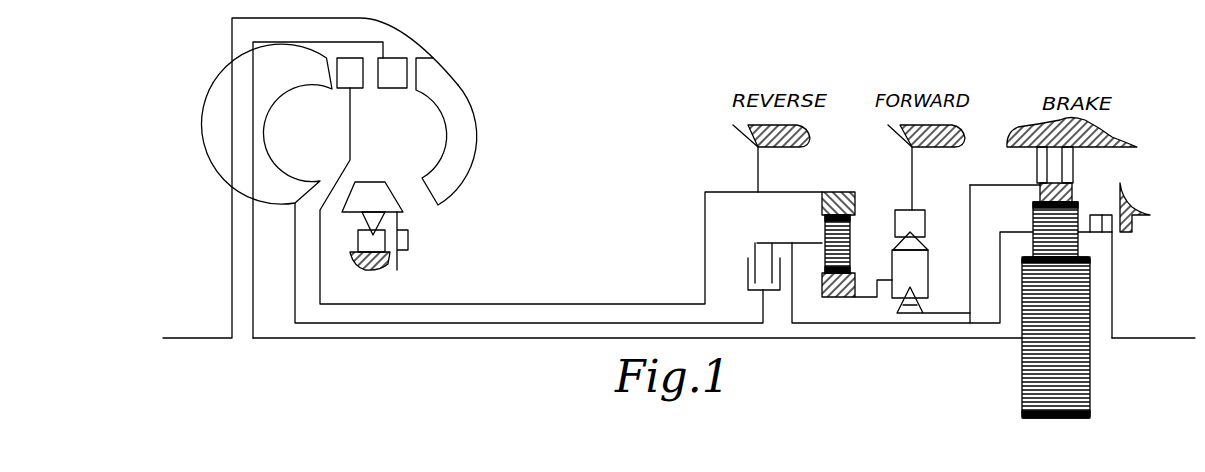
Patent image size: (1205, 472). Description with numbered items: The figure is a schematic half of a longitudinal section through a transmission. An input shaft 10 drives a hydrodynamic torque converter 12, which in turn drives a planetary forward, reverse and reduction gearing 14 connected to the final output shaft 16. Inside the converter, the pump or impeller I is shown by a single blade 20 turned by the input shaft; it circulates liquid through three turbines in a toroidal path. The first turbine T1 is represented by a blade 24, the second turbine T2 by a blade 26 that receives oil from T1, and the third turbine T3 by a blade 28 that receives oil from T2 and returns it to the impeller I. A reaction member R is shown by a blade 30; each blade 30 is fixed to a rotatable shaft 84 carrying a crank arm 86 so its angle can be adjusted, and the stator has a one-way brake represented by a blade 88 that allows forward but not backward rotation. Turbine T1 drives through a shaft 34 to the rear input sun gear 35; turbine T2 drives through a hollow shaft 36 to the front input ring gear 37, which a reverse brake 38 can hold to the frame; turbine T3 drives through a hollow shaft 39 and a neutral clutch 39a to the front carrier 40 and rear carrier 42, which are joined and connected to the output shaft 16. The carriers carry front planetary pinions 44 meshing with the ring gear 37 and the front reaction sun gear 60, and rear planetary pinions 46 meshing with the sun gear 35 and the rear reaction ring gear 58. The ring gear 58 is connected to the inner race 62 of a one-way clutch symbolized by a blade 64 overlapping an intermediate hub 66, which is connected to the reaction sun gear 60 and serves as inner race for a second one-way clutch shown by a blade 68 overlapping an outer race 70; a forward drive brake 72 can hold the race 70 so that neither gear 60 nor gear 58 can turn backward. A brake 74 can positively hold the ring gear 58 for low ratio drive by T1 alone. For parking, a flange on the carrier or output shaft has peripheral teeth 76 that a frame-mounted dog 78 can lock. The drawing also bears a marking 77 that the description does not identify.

The input shaft 10 is at (205, 338).
The torque converter 12 is at (440, 60).
The planetary forward, reverse and reduction gearing 14 is at (967, 137).
The output shaft 16 is at (1143, 337).
The blade 20 is at (450, 88).
The blade 24 is at (398, 62).
The blade 26 is at (335, 60).
The blade 28 is at (283, 152).
The blade 30 is at (387, 182).
The shaft 34 is at (548, 338).
The rear input sun gear 35 is at (1090, 368).
The hollow shaft 36 is at (493, 304).
The front input ring gear 37 is at (855, 200).
The reverse brake 38 is at (753, 138).
The hollow shaft 39 is at (445, 323).
The neutral clutch 39a is at (757, 250).
The front carrier 40 is at (792, 290).
The rear carrier 42 is at (1083, 233).
The front planetary pinions 44 is at (850, 250).
The rear planetary pinions 46 is at (1040, 215).
The reaction ring gear 58 is at (1072, 192).
The reaction sun gear 60 is at (822, 285).
The inner race 62 is at (915, 313).
The blade 64 is at (905, 305).
The intermediate hub 66 is at (928, 272).
The blade 68 is at (920, 240).
The outer race 70 is at (918, 215).
The forward drive brake 72 is at (905, 135).
The brake 74 is at (1073, 163).
The peripheral teeth 76 is at (1105, 232).
The contact chamber 77 is at (768, 224).
The dog 78 is at (1135, 222).
The rotatable shaft 84 is at (371, 212).
The crank arm 86 is at (408, 240).
The blade 88 is at (365, 214).
The first turbine T1 is at (389, 78).
The second turbine T2 is at (348, 78).
The third turbine T3 is at (291, 184).
The reaction member R is at (382, 199).
The pump or impeller I is at (465, 130).